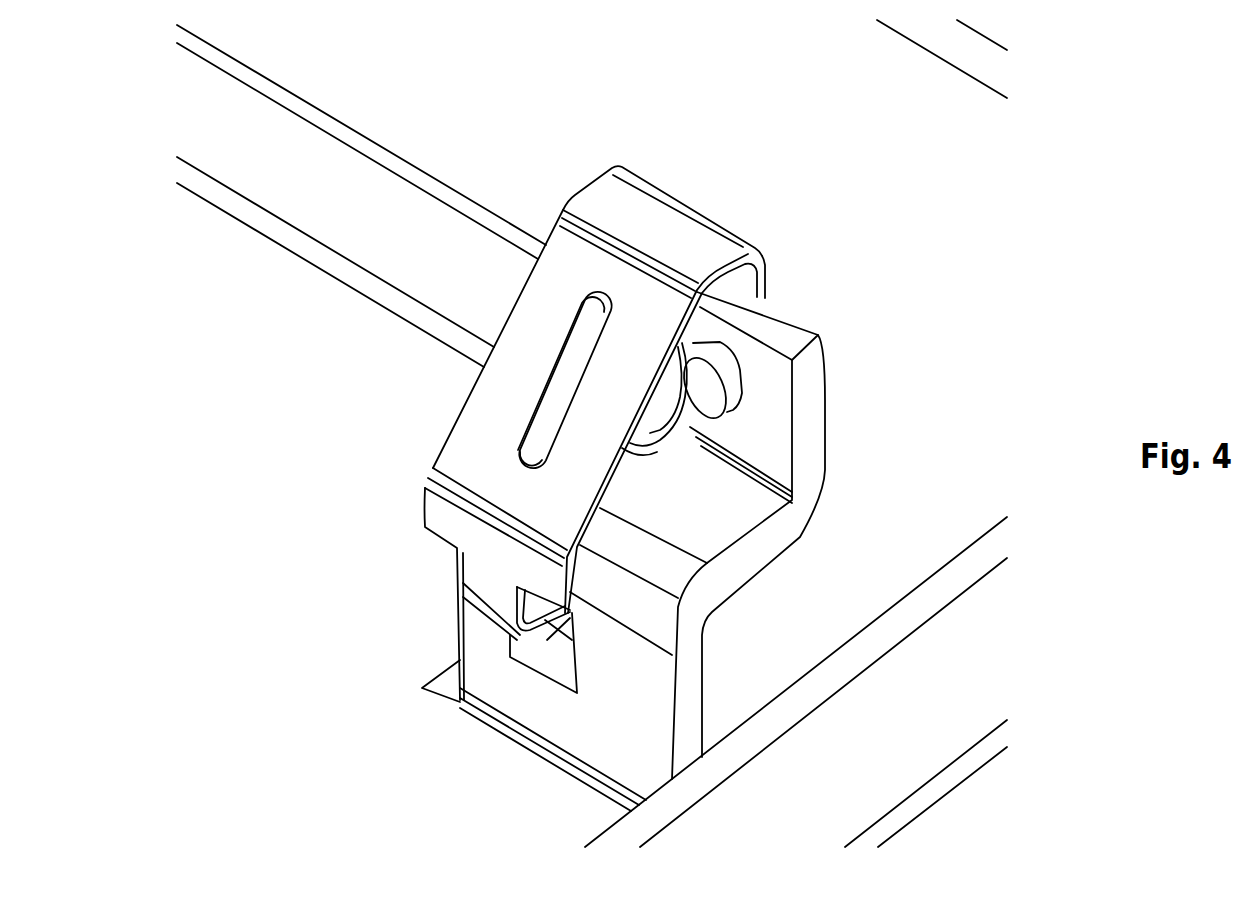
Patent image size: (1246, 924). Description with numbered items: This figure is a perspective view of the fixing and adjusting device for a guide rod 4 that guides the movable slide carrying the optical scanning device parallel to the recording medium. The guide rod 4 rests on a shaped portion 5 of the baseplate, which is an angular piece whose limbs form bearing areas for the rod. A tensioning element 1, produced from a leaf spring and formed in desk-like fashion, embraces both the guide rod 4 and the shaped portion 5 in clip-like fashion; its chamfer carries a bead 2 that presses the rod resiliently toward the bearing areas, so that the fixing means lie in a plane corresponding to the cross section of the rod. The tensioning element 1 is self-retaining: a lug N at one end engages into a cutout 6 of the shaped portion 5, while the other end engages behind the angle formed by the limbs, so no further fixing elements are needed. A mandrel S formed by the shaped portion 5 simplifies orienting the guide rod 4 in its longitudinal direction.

The tensioning element 1 is at (653, 213).
The bead 2 is at (541, 418).
The guide rod 4 is at (428, 273).
The shaped portion 5 is at (808, 418).
The mandrel S is at (702, 388).
The lug N is at (550, 618).
The cutout 6 is at (555, 667).